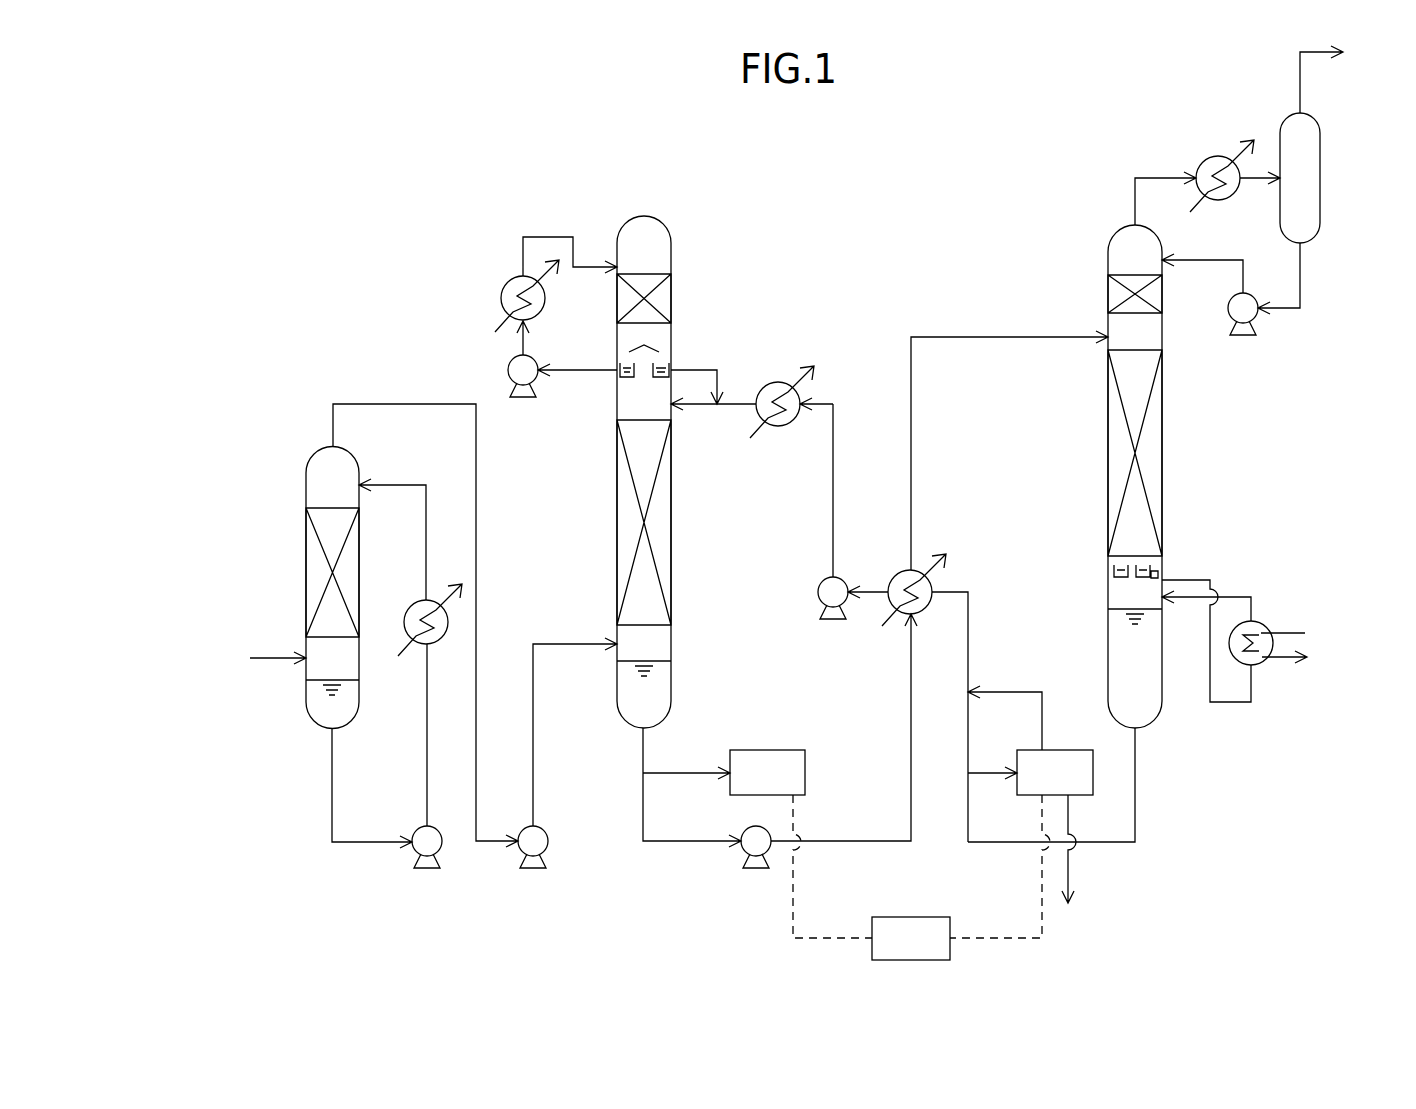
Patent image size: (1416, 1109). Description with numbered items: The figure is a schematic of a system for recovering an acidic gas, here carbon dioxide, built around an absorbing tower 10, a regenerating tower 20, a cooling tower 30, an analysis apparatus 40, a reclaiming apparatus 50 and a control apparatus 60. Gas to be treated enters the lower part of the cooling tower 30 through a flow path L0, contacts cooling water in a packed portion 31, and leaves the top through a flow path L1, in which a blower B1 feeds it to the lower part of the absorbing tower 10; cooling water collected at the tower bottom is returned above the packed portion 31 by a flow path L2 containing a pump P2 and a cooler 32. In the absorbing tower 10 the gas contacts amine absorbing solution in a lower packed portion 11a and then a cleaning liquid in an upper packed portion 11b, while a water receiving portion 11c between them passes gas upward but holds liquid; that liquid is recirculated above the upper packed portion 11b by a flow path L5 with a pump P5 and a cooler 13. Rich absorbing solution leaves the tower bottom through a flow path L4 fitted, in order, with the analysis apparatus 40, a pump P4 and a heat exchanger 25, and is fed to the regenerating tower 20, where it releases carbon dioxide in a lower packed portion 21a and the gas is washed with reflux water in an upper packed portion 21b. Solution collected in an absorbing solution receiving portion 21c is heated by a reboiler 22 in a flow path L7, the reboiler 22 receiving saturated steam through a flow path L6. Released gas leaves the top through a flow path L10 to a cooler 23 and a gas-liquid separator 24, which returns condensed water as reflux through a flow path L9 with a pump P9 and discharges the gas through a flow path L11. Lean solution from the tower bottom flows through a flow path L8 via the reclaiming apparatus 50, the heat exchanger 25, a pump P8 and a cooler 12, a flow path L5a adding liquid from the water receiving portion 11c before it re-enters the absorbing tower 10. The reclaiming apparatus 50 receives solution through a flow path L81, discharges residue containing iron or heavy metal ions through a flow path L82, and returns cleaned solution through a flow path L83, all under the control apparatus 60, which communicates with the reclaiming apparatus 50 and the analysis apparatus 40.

The absorbing tower 10 is at (608, 200).
The lower packed portion 11a is at (630, 522).
The upper packed portion 11b is at (663, 300).
The water receiving portion 11c is at (618, 373).
The cooler 12 is at (785, 426).
The cooler 13 is at (502, 282).
The regenerating tower 20 is at (1086, 210).
The lower packed portion 21a is at (1150, 453).
The upper packed portion 21b is at (1115, 295).
The absorbing solution receiving portion 21c is at (1108, 572).
The reboiler 22 is at (1257, 623).
The cooler 23 is at (1210, 152).
The gas-liquid separator 24 is at (1320, 178).
The heat exchanger 25 is at (918, 567).
The cooling tower 30 is at (289, 444).
The packed portion 31 is at (317, 575).
The cooler 32 is at (408, 606).
The analysis apparatus 40 is at (750, 735).
The reclaiming apparatus 50 is at (1071, 736).
The control apparatus 60 is at (886, 900).
The flow path L0 is at (272, 650).
The flow path L1 is at (403, 404).
The flow path L2 is at (350, 840).
The flow path L4 is at (643, 743).
The flow path L5 is at (578, 367).
The flow path L5a is at (692, 367).
The flow path L6 is at (1293, 630).
The flow path L7 is at (1227, 703).
The flow path L8 is at (1002, 845).
The flow path L81 is at (982, 775).
The flow path L82 is at (1077, 867).
The flow path L83 is at (1025, 695).
The flow path L9 is at (1207, 267).
The flow path L10 is at (1133, 197).
The flow path L11 is at (1298, 83).
The pump P2 is at (424, 870).
The pump P4 is at (758, 870).
The pump P5 is at (523, 397).
The pump P8 is at (818, 600).
The pump P9 is at (1243, 337).
The blower B1 is at (552, 842).